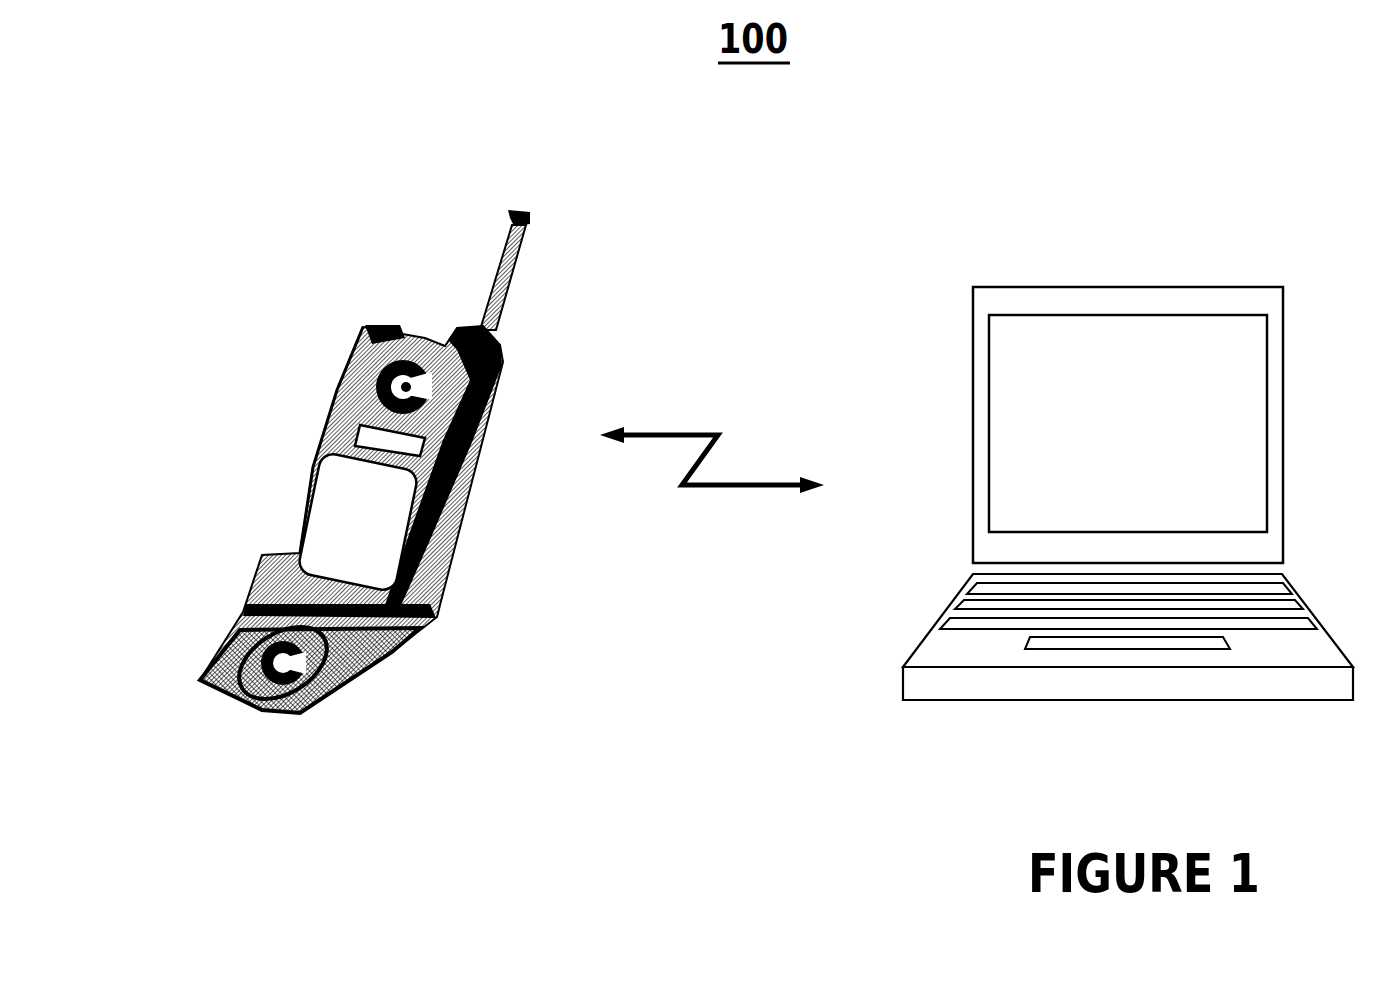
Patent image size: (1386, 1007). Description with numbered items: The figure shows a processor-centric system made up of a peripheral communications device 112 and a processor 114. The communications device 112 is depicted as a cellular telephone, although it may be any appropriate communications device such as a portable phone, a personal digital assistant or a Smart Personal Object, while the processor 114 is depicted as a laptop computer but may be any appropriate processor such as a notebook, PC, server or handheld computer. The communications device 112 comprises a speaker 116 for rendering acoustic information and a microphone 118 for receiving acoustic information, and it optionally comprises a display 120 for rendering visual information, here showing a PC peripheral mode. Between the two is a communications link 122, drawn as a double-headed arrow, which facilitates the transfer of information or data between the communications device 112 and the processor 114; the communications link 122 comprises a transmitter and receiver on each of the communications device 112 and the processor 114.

The peripheral communications device 112 is at (360, 285).
The processor 114 is at (1225, 266).
The speaker 116 is at (372, 382).
The microphone 118 is at (325, 692).
The display 120 is at (313, 563).
The communications link 122 is at (733, 488).